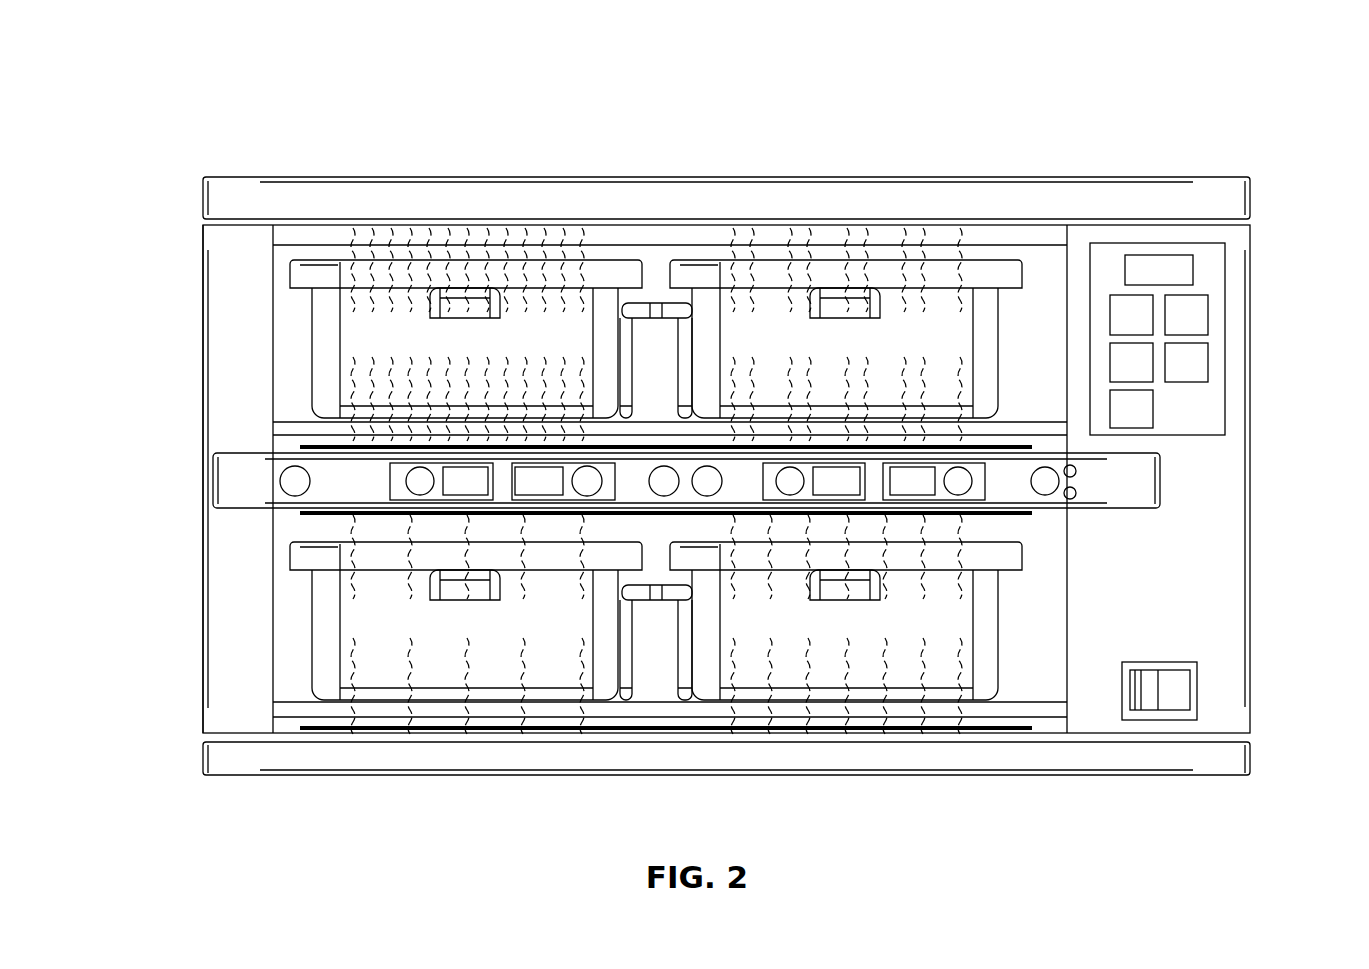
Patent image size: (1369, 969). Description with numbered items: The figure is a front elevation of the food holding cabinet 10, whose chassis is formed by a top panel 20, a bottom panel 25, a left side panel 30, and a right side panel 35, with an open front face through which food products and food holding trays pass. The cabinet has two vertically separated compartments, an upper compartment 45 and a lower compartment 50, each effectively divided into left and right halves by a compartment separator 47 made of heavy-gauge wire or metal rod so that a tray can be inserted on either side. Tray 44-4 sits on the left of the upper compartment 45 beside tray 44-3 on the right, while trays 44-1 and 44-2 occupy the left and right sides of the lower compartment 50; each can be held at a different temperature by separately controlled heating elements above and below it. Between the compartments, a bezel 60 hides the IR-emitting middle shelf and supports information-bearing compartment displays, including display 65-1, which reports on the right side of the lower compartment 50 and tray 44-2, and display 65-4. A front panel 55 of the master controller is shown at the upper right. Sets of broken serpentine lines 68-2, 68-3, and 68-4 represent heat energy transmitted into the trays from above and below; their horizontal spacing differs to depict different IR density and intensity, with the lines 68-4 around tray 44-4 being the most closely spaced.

The cabinet 10 is at (1247, 68).
The top panel 20 is at (1165, 178).
The bottom panel 25 is at (1170, 776).
The left side panel 30 is at (205, 715).
The right side panel 35 is at (1250, 712).
The food holding tray 44-1 is at (322, 632).
The food holding tray 44-2 is at (985, 625).
The food holding tray 44-3 is at (1002, 328).
The food holding tray 44-4 is at (322, 332).
The upper compartment 45 is at (287, 372).
The compartment separator 47 is at (657, 312).
The lower compartment 50 is at (287, 672).
The front panel 55 is at (1208, 270).
The bezel 60 is at (248, 480).
The compartment display 65-1 is at (975, 502).
The compartment display 65-4 is at (443, 500).
The serpentine lines 68-2 is at (732, 707).
The serpentine lines 68-3 is at (730, 237).
The serpentine lines 68-4 is at (350, 237).